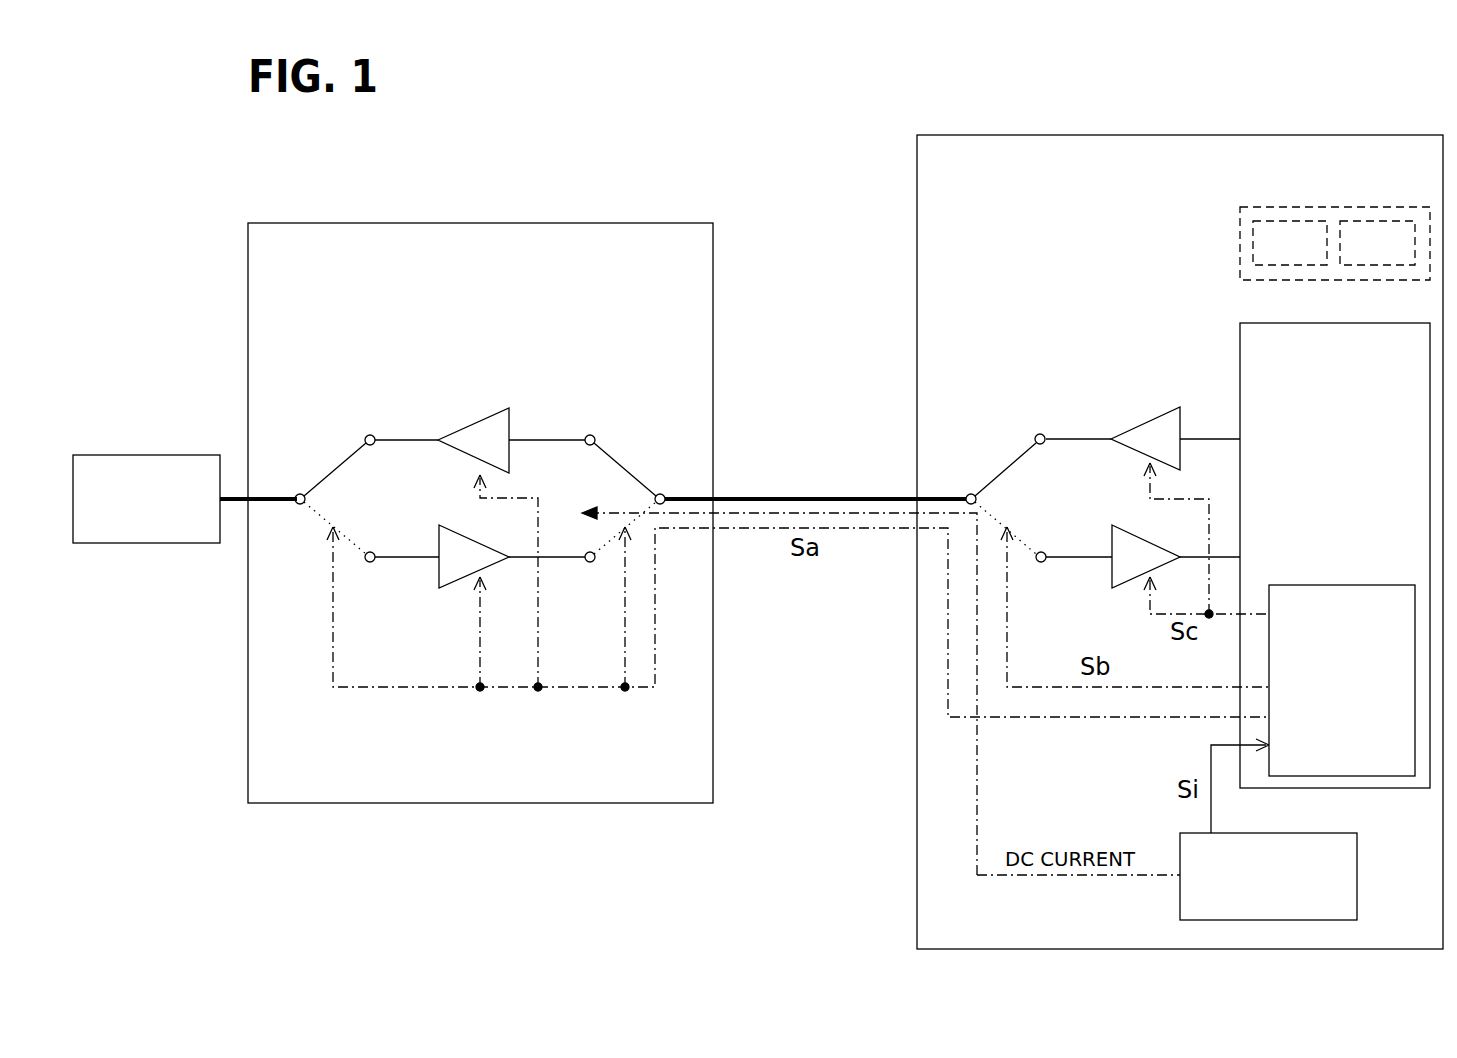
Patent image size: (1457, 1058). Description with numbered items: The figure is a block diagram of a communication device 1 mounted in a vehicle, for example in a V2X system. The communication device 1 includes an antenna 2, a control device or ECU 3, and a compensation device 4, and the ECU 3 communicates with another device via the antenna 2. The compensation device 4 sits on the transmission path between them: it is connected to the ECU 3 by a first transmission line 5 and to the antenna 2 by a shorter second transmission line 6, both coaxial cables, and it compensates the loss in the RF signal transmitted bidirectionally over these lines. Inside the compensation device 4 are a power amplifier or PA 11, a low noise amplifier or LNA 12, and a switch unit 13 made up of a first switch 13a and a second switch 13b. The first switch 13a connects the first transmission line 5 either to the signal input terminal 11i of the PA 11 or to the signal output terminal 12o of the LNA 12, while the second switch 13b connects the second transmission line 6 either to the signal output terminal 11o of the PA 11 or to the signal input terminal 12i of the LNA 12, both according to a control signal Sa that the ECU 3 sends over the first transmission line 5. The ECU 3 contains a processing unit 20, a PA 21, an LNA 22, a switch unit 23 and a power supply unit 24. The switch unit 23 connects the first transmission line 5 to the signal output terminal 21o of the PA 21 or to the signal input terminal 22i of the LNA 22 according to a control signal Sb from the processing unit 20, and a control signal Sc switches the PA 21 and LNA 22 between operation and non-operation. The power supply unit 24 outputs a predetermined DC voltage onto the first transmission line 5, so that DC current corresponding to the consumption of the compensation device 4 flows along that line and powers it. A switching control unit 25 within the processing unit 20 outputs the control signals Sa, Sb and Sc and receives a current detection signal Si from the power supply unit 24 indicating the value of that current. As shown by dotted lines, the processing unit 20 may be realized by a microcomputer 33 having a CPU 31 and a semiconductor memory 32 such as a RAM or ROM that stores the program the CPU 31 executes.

The communication device 1 is at (160, 137).
The antenna 2 is at (136, 455).
The control device (ECU) 3 is at (1000, 135).
The compensation device 4 is at (330, 222).
The first transmission line 5 is at (828, 496).
The second transmission line 6 is at (240, 494).
The power amplifier (PA) 11 is at (480, 421).
The signal output terminal of the PA 11o is at (377, 433).
The signal input terminal of the PA 11i is at (588, 433).
The low noise amplifier (LNA) 12 is at (480, 568).
The signal input terminal of the LNA 12i is at (372, 564).
The signal output terminal of the LNA 12o is at (590, 564).
The switch unit 13 is at (480, 403).
The first switch 13a is at (609, 431).
The second switch 13b is at (335, 475).
The processing unit 20 is at (1300, 323).
The PA 21 is at (1137, 418).
The signal output terminal of the PA 21o is at (1044, 432).
The LNA 22 is at (1138, 570).
The signal input terminal of the LNA 22i is at (1043, 564).
The switch unit 23 is at (1005, 468).
The power supply unit 24 is at (1298, 833).
The switching control unit 25 is at (1327, 585).
The CPU 31 is at (1290, 221).
The semiconductor memory 32 is at (1378, 221).
The microcomputer 33 is at (1238, 219).